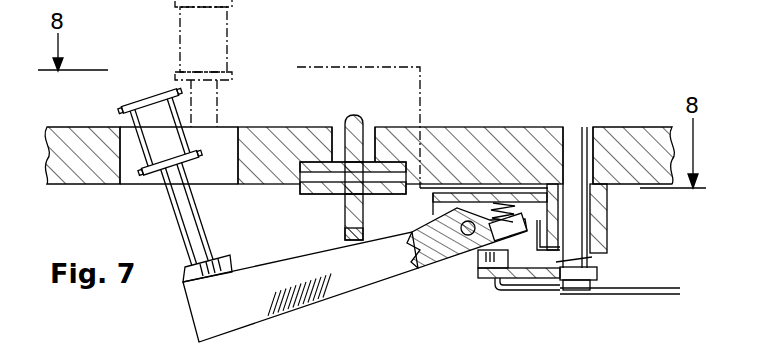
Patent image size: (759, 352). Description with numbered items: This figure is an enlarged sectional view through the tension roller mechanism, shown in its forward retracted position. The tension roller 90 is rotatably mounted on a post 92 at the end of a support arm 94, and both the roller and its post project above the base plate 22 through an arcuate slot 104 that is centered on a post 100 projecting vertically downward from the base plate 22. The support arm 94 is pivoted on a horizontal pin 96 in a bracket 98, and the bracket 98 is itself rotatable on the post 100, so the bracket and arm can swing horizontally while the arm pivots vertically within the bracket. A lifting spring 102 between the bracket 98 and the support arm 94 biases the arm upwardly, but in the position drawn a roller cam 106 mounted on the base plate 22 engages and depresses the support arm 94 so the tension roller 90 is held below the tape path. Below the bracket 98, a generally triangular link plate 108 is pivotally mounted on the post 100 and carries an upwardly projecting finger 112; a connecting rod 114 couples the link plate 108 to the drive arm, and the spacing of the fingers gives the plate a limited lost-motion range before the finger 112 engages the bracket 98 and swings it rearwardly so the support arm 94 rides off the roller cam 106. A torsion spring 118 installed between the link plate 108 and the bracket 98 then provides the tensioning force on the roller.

The base plate 22 is at (447, 128).
The tension roller 90 is at (178, 29).
The post 92 is at (182, 209).
The support arm 94 is at (367, 278).
The horizontal pin 96 is at (455, 225).
The bracket 98 is at (607, 213).
The post 100 is at (585, 290).
The lifting spring 102 is at (503, 202).
The arcuate slot 104 is at (222, 131).
The roller cam 106 is at (343, 235).
The link plate 108 is at (510, 279).
The finger 112 is at (478, 252).
The connecting rod 114 is at (637, 287).
The torsion spring 118 is at (590, 258).